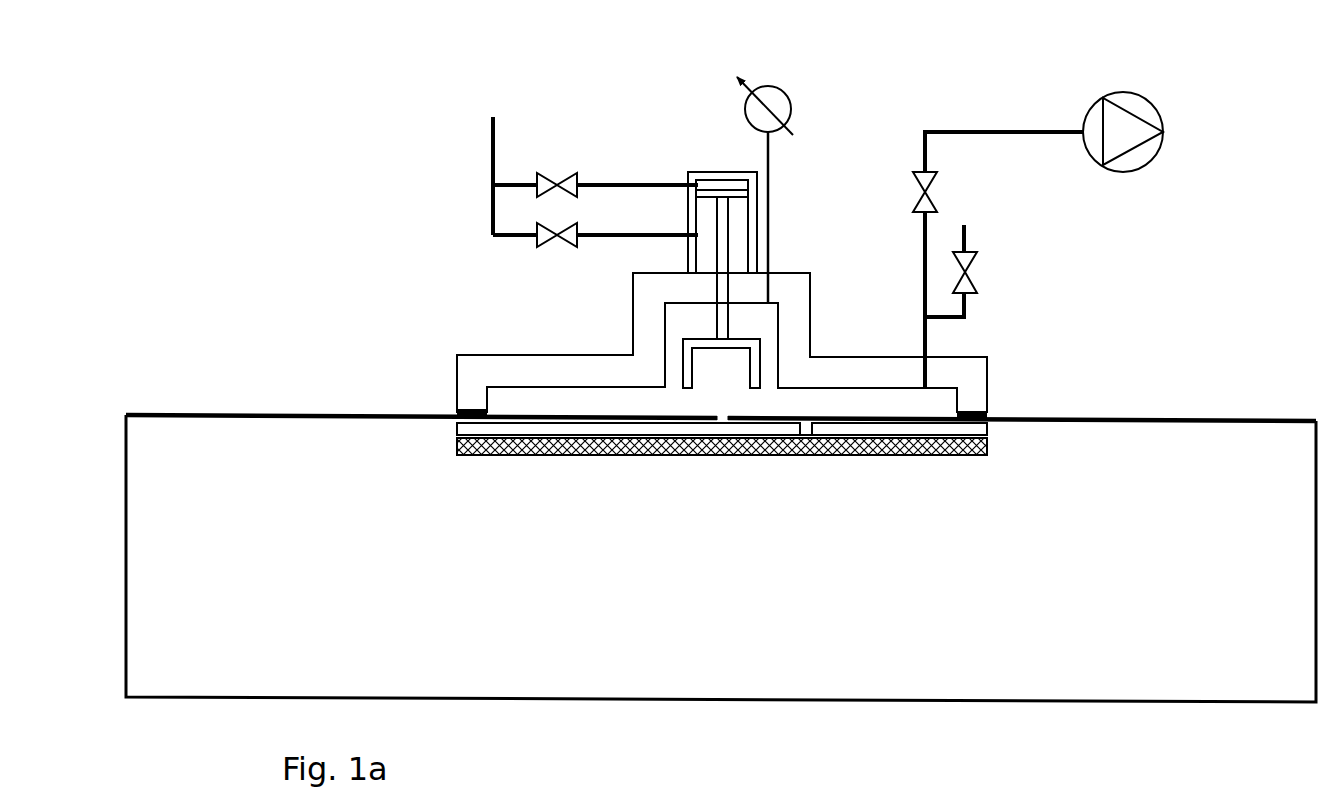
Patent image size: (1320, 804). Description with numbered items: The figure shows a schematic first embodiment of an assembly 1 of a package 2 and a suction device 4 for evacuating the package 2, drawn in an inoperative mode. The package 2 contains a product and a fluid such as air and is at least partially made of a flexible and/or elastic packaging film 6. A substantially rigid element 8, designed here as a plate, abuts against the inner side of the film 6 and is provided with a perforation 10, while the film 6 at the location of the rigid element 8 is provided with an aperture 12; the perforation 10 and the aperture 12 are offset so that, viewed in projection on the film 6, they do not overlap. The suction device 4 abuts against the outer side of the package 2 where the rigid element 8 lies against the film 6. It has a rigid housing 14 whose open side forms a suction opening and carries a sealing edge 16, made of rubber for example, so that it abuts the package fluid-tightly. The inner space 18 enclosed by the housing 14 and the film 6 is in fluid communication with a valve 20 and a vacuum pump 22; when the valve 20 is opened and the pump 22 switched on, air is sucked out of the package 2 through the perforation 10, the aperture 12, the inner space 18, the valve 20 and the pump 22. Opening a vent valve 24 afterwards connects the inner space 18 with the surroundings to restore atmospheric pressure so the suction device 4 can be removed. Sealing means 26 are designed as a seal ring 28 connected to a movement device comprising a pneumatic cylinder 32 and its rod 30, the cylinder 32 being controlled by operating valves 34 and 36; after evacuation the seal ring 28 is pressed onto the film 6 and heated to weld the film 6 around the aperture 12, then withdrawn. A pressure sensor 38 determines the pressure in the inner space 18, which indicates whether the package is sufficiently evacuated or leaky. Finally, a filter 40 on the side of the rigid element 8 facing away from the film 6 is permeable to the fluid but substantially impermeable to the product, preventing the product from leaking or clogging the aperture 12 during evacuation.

The assembly 1 is at (393, 130).
The package 2 is at (315, 413).
The suction device 4 is at (393, 280).
The packaging film 6 is at (519, 421).
The substantially rigid element 8 is at (978, 431).
The perforation 10 is at (815, 417).
The aperture 12 is at (721, 415).
The rigid housing 14 is at (980, 376).
The sealing edge 16 is at (987, 414).
The inner space 18 is at (554, 400).
The valve 20 is at (937, 192).
The vacuum pump 22 is at (1123, 92).
The vent valve 24 is at (977, 272).
The sealing means 26 is at (676, 161).
The seal ring 28 is at (762, 350).
The rod 30 is at (713, 320).
The pneumatic cylinder 32 is at (715, 172).
The valve 34 is at (557, 185).
The valve 36 is at (557, 235).
The pressure sensor 38 is at (793, 109).
The filter 40 is at (978, 451).